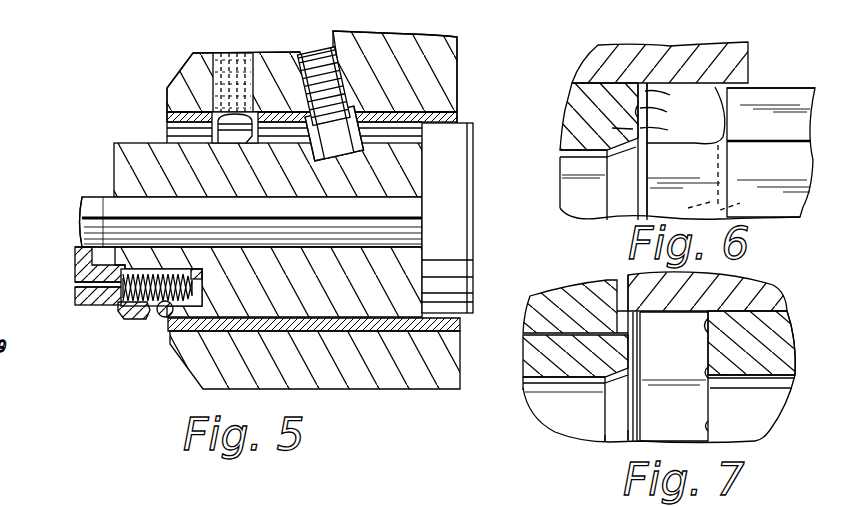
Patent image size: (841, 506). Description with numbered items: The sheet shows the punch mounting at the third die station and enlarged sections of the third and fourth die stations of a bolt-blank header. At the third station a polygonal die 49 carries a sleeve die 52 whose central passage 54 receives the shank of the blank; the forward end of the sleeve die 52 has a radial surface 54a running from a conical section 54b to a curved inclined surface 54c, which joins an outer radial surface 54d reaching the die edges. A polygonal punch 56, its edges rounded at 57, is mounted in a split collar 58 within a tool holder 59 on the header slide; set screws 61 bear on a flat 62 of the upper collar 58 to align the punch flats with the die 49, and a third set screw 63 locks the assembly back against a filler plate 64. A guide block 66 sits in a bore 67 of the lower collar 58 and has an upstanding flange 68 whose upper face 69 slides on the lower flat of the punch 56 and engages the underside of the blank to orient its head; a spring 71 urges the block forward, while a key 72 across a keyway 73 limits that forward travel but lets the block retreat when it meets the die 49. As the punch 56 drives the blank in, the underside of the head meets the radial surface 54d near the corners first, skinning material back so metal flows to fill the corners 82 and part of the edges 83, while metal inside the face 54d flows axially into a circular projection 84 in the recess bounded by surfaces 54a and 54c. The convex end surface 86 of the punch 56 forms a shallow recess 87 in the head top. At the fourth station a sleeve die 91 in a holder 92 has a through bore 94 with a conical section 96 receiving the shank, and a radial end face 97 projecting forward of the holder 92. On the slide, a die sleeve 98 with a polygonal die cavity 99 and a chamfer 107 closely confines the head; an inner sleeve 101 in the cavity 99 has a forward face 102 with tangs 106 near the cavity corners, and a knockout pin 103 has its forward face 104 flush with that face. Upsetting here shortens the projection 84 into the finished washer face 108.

In FIG. 6, the polygonal die 49 is at (602, 55).
In FIG. 6, the sleeve die 52 is at (572, 111).
In FIG. 6, the central passage 54 is at (565, 152).
In FIG. 6, the radial surface 54a is at (671, 130).
In FIG. 6, the conical section 54b is at (605, 157).
In FIG. 6, the curved inclined surface 54c is at (671, 112).
In FIG. 6, the radial surface 54d is at (675, 95).
In FIG. 5, the polygonal punch 56 is at (188, 207).
In FIG. 6, the polygonal punch 56 is at (784, 102).
In FIG. 5, the rounded edges 57 is at (103, 222).
In FIG. 6, the rounded edges 57 is at (758, 87).
In FIG. 5, the split collar 58 is at (130, 152).
In FIG. 5, the tool holder 59 is at (193, 366).
In FIG. 5, the set screws 61 is at (190, 64).
In FIG. 5, the flat 62 is at (150, 135).
In FIG. 5, the third set screw 63 is at (347, 84).
In FIG. 5, the filler plate 64 is at (471, 164).
In FIG. 5, the guide block 66 is at (92, 307).
In FIG. 5, the bore 67 is at (203, 271).
In FIG. 5, the flange 68 is at (78, 256).
In FIG. 5, the upper face 69 is at (78, 245).
In FIG. 5, the spring 71 is at (203, 288).
In FIG. 5, the key 72 is at (162, 318).
In FIG. 5, the keyway 73 is at (131, 321).
In FIG. 6, the corners 82 is at (647, 83).
In FIG. 6, the edges 83 is at (689, 81).
In FIG. 6, the circular projection 84 is at (610, 130).
In FIG. 5, the convex end surface 86 is at (82, 220).
In FIG. 6, the convex end surface 86 is at (687, 208).
In FIG. 6, the shallow recess 87 is at (744, 204).
In FIG. 7, the sleeve die 91 is at (528, 357).
In FIG. 7, the holder 92 is at (560, 292).
In FIG. 7, the through bore 94 is at (605, 404).
In FIG. 7, the conical section 96 is at (633, 381).
In FIG. 7, the radial end face 97 is at (640, 352).
In FIG. 7, the die sleeve 98 is at (733, 289).
In FIG. 7, the polygonal die cavity 99 is at (668, 312).
In FIG. 7, the inner sleeve 101 is at (773, 378).
In FIG. 7, the forward face 102 is at (710, 374).
In FIG. 7, the knockout pin 103 is at (760, 437).
In FIG. 7, the forward face 104 is at (713, 428).
In FIG. 7, the tangs 106 is at (710, 325).
In FIG. 7, the chamfer 107 is at (617, 317).
In FIG. 7, the finished washer face 108 is at (632, 426).